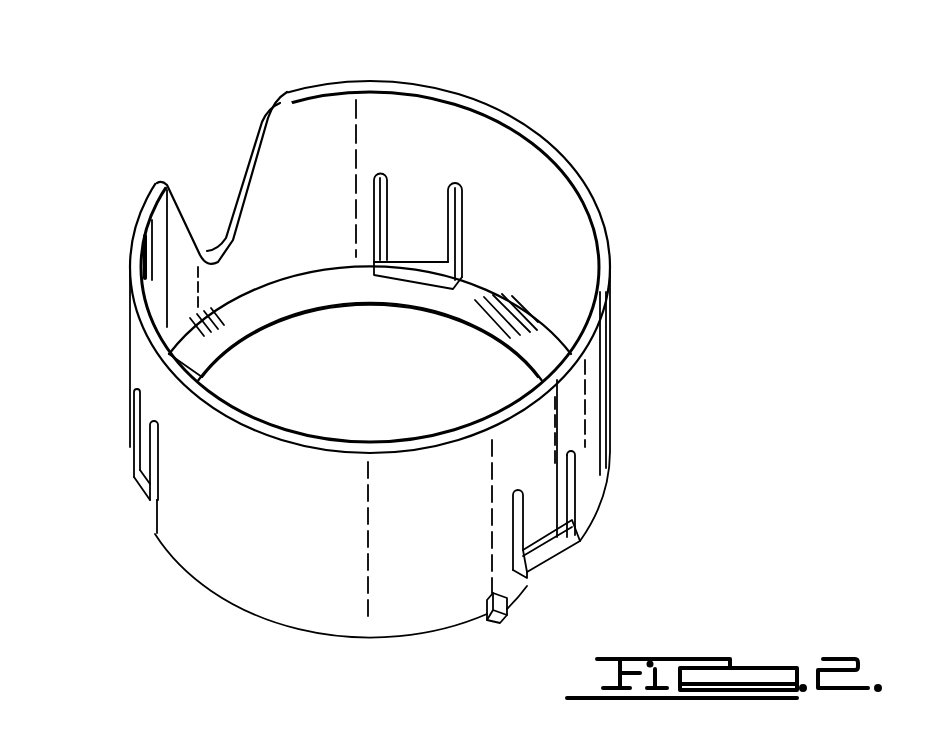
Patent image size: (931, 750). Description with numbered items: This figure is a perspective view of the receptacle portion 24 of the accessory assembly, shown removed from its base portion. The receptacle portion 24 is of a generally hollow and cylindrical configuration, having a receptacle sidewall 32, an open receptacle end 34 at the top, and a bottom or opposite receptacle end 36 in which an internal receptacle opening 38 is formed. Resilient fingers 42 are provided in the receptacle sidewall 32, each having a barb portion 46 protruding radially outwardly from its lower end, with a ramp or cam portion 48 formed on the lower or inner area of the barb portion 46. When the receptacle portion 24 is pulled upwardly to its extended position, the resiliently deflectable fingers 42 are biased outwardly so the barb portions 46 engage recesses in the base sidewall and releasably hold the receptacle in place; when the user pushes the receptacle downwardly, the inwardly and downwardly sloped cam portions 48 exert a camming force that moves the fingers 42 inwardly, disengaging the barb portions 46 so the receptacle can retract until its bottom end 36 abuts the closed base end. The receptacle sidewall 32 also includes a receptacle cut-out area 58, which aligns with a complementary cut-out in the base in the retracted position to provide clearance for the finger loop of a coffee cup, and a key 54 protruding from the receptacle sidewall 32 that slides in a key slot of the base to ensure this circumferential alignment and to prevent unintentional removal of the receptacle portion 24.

The receptacle portion 24 is at (564, 152).
The receptacle sidewall 32 is at (560, 224).
The open receptacle end 34 is at (358, 84).
The bottom or opposite receptacle end 36 is at (252, 315).
The internal receptacle opening 38 is at (390, 305).
The resilient fingers 42 is at (413, 219).
The barb portion 46 is at (457, 250).
The ramp or cam portion 48 is at (543, 567).
The key 54 is at (487, 624).
The receptacle cut-out area 58 is at (263, 139).